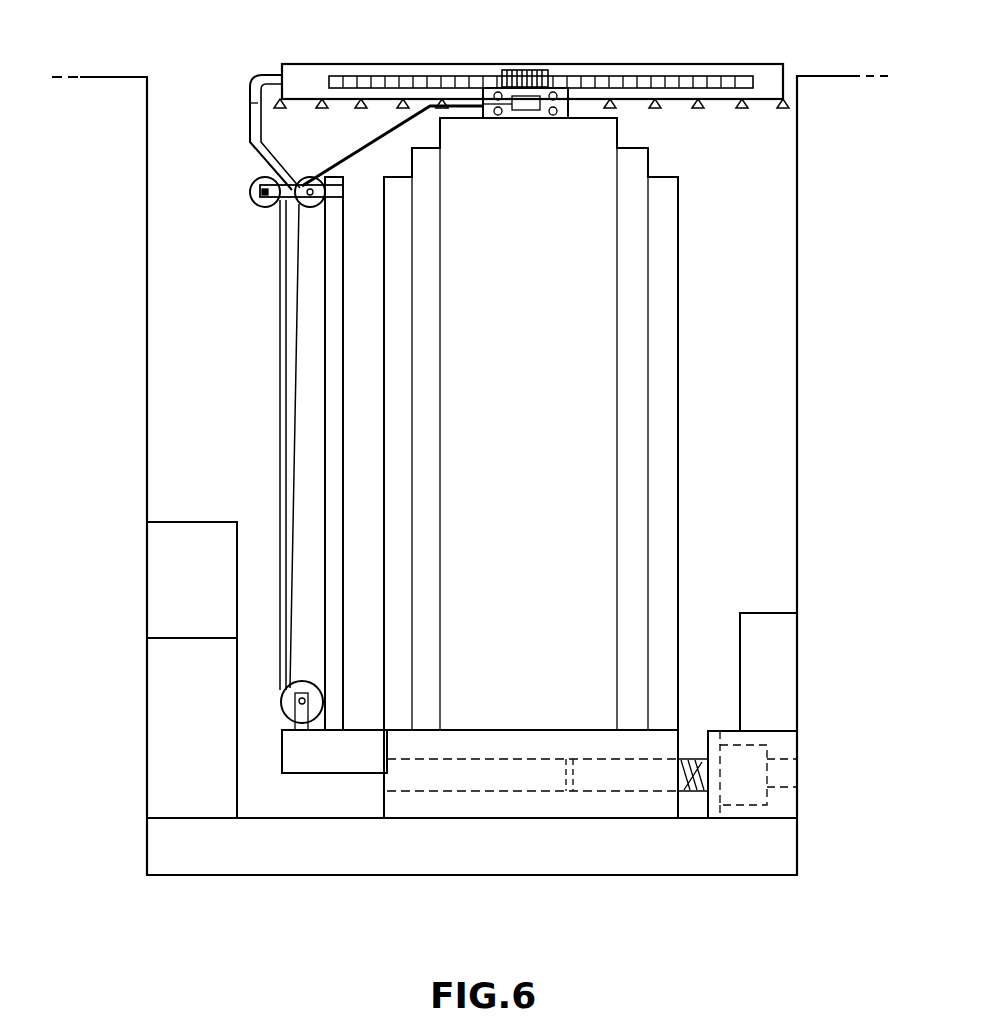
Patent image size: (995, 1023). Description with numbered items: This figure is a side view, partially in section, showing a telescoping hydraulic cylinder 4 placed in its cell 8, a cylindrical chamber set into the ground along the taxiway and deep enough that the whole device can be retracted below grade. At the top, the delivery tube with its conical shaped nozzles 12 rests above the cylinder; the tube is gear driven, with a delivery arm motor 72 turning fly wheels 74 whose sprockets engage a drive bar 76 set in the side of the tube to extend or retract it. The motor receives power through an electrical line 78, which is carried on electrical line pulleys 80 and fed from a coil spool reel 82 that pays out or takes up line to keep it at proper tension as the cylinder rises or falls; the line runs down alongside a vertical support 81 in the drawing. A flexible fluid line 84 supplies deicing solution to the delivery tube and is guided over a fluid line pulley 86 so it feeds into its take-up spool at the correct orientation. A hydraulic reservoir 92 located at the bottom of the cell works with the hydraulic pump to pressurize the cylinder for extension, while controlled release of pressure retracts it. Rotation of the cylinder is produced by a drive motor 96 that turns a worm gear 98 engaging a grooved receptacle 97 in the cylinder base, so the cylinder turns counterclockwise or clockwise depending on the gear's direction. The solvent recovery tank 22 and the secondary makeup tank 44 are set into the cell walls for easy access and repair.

The telescoping hydraulic cylinder 4 is at (666, 480).
The cell 8 is at (148, 373).
The conical shaped nozzles 12 is at (700, 108).
The solvent recovery tank 22 is at (204, 742).
The secondary makeup tank 44 is at (202, 602).
The delivery arm motor 72 is at (548, 100).
The fly wheels 74 is at (527, 72).
The drive bar 76 is at (420, 82).
The electrical line 78 is at (338, 160).
The electrical line pulleys 80 is at (312, 206).
The support column 81 is at (335, 420).
The coil spool reel 82 is at (280, 241).
The flexible fluid line 84 is at (250, 143).
The fluid line pulley 86 is at (252, 204).
The hydraulic reservoir 92 is at (784, 676).
The drive motor 96 is at (745, 805).
The grooved receptacle 97 is at (482, 788).
The worm gear 98 is at (637, 778).